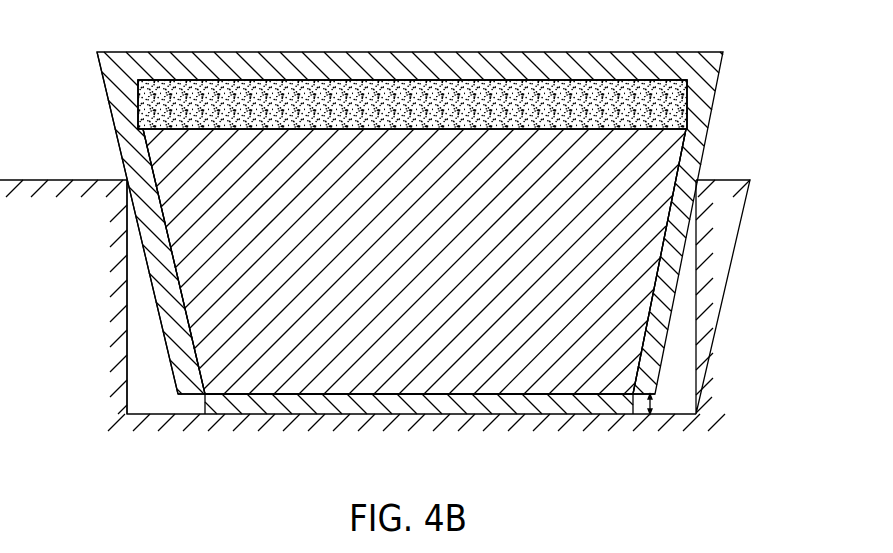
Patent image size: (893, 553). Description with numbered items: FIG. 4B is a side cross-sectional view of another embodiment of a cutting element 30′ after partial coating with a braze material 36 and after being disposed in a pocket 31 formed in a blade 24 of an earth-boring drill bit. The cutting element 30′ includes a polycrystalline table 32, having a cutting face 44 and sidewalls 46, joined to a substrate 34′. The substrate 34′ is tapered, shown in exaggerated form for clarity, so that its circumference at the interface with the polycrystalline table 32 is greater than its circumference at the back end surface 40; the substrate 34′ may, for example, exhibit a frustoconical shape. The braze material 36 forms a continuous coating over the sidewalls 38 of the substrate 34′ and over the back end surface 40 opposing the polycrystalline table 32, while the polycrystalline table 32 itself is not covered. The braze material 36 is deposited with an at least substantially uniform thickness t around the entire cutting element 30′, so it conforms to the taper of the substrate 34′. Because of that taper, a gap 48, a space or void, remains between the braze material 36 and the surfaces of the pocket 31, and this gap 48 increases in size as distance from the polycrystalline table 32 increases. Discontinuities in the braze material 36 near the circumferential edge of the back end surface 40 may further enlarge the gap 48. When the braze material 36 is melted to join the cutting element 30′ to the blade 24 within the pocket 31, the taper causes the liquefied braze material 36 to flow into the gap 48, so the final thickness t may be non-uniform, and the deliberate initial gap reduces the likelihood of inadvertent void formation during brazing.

The cutting face 44 is at (415, 58).
The sidewalls of the polycrystalline table 46 is at (147, 105).
The polycrystalline table 32 is at (662, 108).
The substrate 34′ is at (662, 170).
The cutting element 30′ is at (761, 110).
The sidewalls of the substrate 38 is at (178, 253).
The braze material 36 is at (145, 200).
The back end surface 40 is at (492, 402).
The thickness t is at (657, 404).
The gap 48 is at (140, 380).
The pocket 31 is at (697, 332).
The blade 24 is at (707, 397).